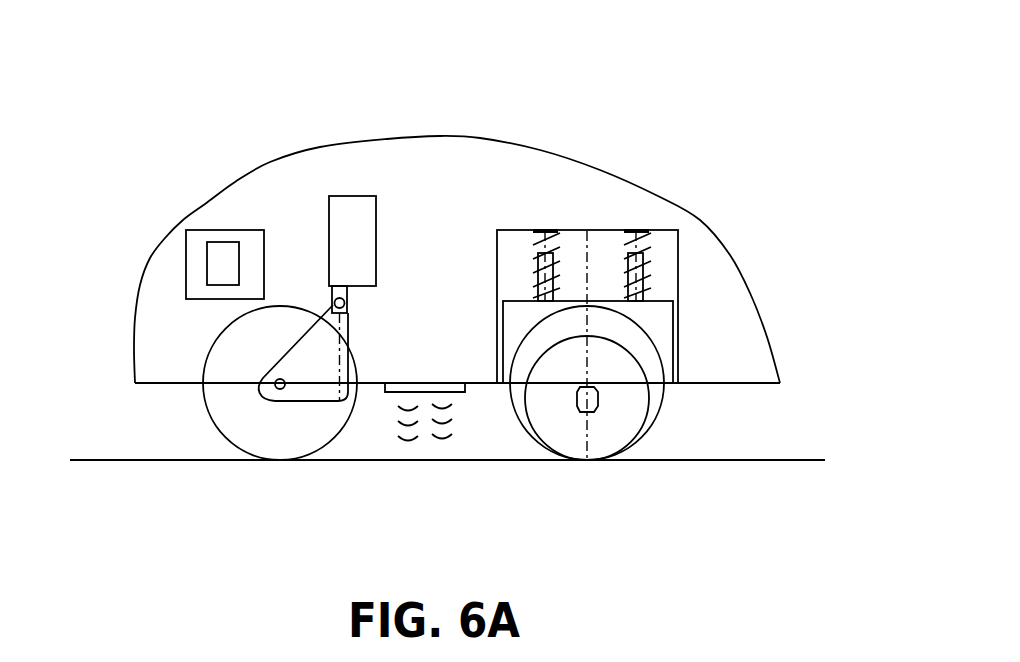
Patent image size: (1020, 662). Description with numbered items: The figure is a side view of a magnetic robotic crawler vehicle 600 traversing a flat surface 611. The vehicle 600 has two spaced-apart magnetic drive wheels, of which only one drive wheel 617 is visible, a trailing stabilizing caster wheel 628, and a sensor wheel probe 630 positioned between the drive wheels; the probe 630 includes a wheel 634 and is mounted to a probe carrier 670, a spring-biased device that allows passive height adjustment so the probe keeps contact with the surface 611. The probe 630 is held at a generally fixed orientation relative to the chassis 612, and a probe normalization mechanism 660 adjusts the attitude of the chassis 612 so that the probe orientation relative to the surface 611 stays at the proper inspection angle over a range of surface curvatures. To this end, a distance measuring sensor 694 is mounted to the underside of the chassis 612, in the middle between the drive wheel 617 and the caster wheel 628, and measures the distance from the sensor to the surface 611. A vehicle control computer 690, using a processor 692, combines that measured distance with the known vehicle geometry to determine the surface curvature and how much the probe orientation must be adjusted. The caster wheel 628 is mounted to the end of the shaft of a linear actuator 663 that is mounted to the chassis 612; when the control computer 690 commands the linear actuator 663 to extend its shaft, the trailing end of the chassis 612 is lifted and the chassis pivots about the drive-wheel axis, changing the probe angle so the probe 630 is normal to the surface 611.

The crawler vehicle 600 is at (178, 80).
The surface 611 is at (112, 455).
The chassis 612 is at (378, 138).
The drive wheel 617 is at (652, 372).
The caster wheel 628 is at (264, 424).
The sensor wheel probe 630 is at (607, 471).
The wheel 634 is at (572, 430).
The probe normalization mechanism 660 is at (431, 233).
The linear actuator 663 is at (336, 218).
The probe carrier 670 is at (569, 229).
The vehicle control computer 690 is at (193, 275).
The processor 692 is at (217, 250).
The distance measuring sensor 694 is at (383, 394).